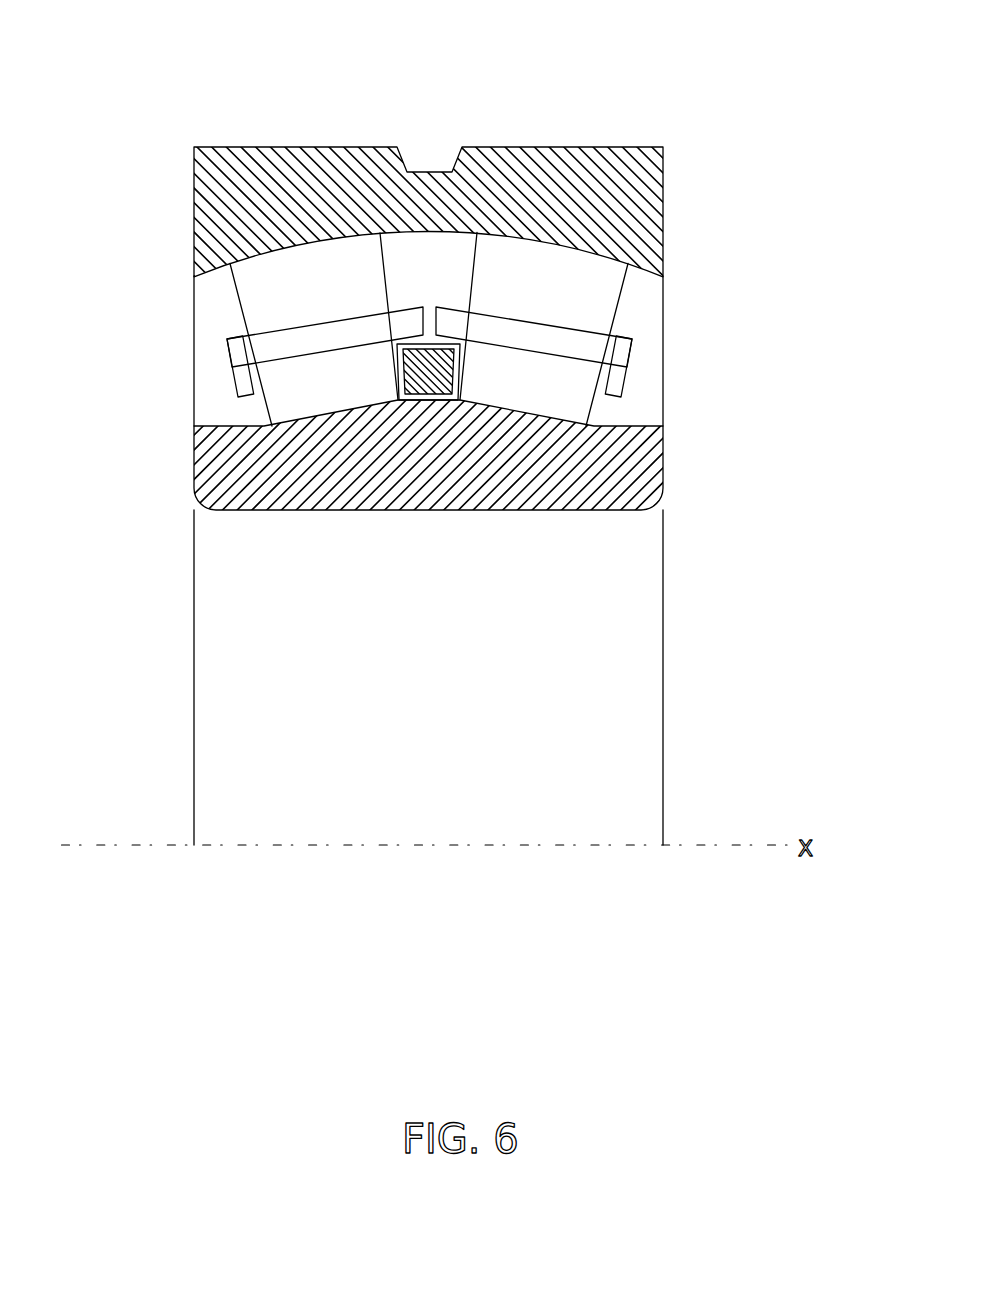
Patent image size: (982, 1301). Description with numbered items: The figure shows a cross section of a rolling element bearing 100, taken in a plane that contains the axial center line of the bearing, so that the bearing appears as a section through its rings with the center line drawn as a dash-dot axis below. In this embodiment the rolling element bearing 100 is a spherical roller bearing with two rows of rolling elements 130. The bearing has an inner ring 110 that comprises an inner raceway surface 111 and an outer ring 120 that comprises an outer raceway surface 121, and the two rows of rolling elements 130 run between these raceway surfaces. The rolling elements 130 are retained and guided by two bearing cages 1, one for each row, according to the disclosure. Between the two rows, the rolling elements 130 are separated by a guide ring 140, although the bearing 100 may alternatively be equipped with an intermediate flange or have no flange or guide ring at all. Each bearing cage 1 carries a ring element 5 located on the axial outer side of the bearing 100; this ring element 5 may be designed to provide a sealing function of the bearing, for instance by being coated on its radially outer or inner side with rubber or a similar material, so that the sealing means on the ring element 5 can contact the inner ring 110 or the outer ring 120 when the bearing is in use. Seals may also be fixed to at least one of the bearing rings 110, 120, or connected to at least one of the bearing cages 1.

The rolling element bearing 100 is at (149, 90).
The inner ring 110 is at (663, 473).
The inner raceway surface 111 is at (623, 416).
The outer ring 120 is at (282, 148).
The outer raceway surface 121 is at (591, 262).
The rolling elements 130 is at (238, 310).
The guide ring 140 is at (430, 400).
The bearing cage 1 is at (231, 369).
The ring element 5 is at (227, 355).